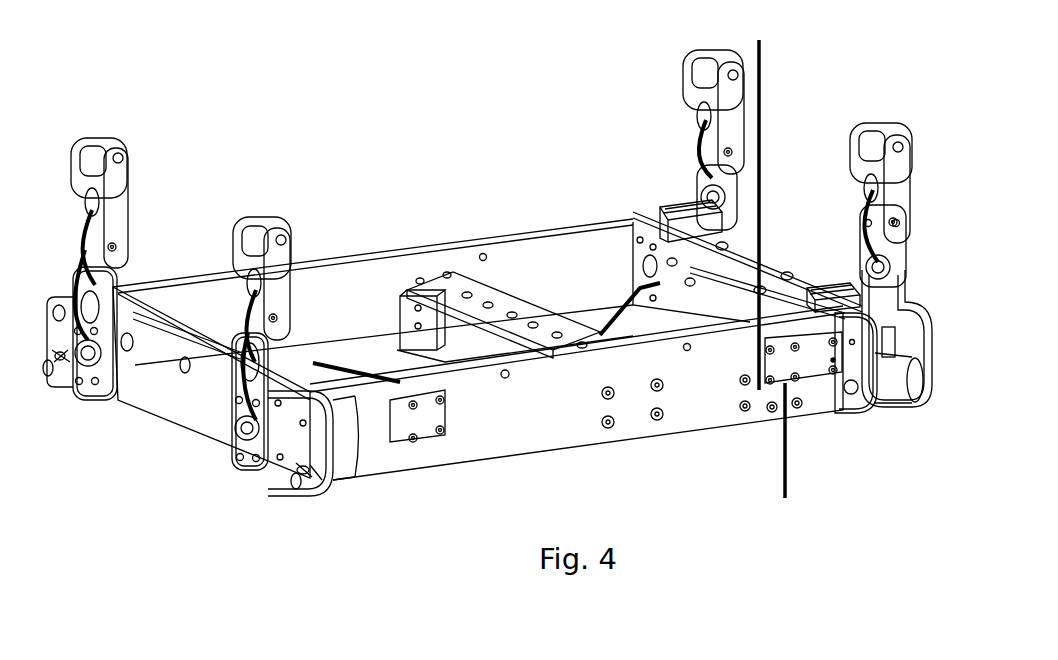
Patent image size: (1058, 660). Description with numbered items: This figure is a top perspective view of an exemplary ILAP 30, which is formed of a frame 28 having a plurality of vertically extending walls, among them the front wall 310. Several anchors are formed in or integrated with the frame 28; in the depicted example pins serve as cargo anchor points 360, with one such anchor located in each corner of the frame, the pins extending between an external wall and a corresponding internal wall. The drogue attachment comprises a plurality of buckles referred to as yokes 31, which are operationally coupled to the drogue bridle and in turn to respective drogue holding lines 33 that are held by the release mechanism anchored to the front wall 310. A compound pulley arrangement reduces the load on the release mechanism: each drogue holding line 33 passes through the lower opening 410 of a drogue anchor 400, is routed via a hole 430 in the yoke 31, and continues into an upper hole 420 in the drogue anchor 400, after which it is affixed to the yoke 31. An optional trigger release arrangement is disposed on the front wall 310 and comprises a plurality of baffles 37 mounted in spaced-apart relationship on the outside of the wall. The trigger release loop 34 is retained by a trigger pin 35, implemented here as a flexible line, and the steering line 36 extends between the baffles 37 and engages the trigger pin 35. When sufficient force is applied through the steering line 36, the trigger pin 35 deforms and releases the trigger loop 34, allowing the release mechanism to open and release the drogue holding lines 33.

The frame 28 is at (490, 500).
The ILAP 30 is at (445, 253).
The yoke 31 is at (125, 185).
The drogue holding line 33 is at (345, 357).
The trigger release loop 34 is at (790, 413).
The trigger pin 35 is at (763, 398).
The steering line 36 is at (762, 130).
The baffles 37 is at (855, 400).
The front wall 310 is at (537, 415).
The cargo anchor point 360 is at (892, 355).
The drogue anchor 400 is at (110, 283).
The lower opening 410 is at (237, 427).
The upper hole 420 is at (225, 345).
The yoke hole 430 is at (697, 113).